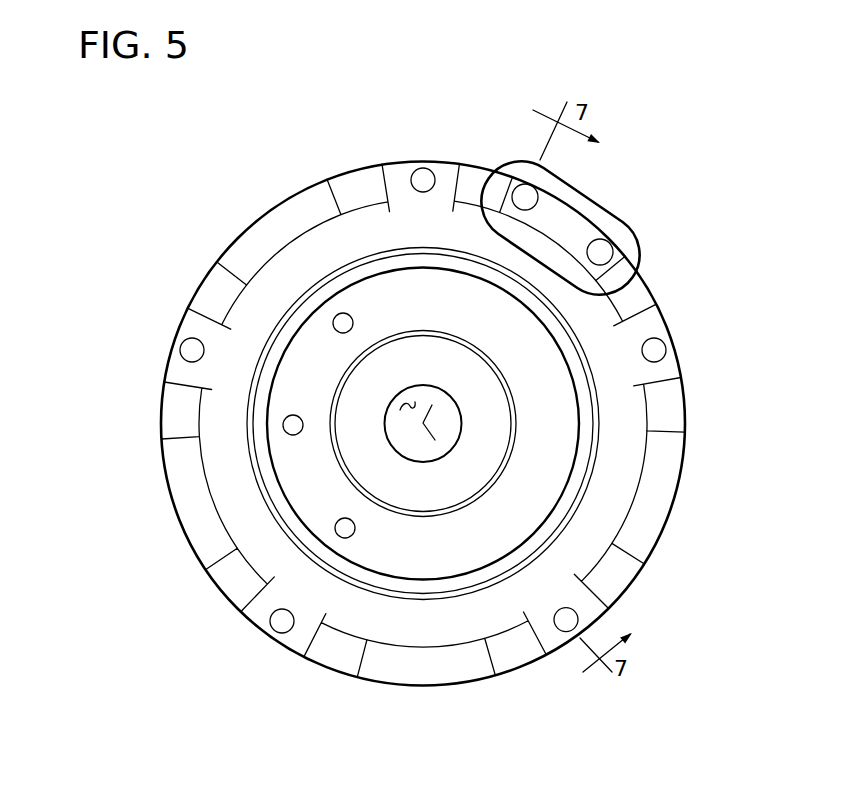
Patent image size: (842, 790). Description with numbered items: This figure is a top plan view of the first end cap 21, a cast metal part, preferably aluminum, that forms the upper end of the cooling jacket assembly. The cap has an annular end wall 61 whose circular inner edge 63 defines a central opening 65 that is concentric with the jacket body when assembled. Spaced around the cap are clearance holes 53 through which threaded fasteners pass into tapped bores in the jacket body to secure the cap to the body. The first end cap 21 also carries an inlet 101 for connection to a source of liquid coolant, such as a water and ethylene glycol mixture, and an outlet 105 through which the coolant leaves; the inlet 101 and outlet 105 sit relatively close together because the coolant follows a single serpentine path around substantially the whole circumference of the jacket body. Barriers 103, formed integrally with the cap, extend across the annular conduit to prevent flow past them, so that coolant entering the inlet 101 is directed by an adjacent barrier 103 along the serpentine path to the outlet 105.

The first end cap 21 is at (404, 147).
The clearance holes 53 is at (283, 636).
The annular end wall 61 is at (317, 348).
The circular inner edge 63 is at (395, 448).
The central opening 65 is at (410, 402).
The inlet 101 is at (613, 250).
The barriers 103 is at (640, 322).
The outlet 105 is at (520, 184).